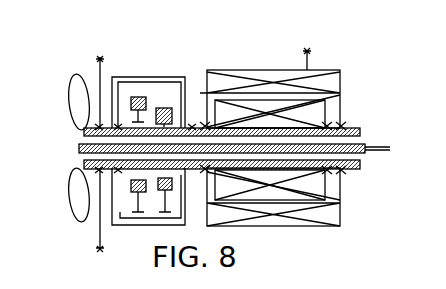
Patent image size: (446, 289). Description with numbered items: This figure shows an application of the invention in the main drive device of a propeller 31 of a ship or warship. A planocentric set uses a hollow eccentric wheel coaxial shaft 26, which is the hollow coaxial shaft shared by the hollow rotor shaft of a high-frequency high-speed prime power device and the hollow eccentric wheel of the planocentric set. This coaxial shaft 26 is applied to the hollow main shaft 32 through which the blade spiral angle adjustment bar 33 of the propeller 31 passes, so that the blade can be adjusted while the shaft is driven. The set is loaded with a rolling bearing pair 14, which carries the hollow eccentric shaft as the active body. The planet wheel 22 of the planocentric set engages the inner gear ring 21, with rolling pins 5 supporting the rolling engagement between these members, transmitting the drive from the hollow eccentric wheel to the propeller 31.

The rolling pin 5 is at (265, 88).
The rolling bearing pair 14 is at (164, 115).
The inner gear ring 21 is at (134, 81).
The planet wheel 22 is at (147, 103).
The hollow coaxial shaft 26 is at (205, 125).
The propeller 31 is at (82, 99).
The hollow main shaft 32 is at (85, 133).
The blade spiral angle adjustment bar 33 is at (78, 146).